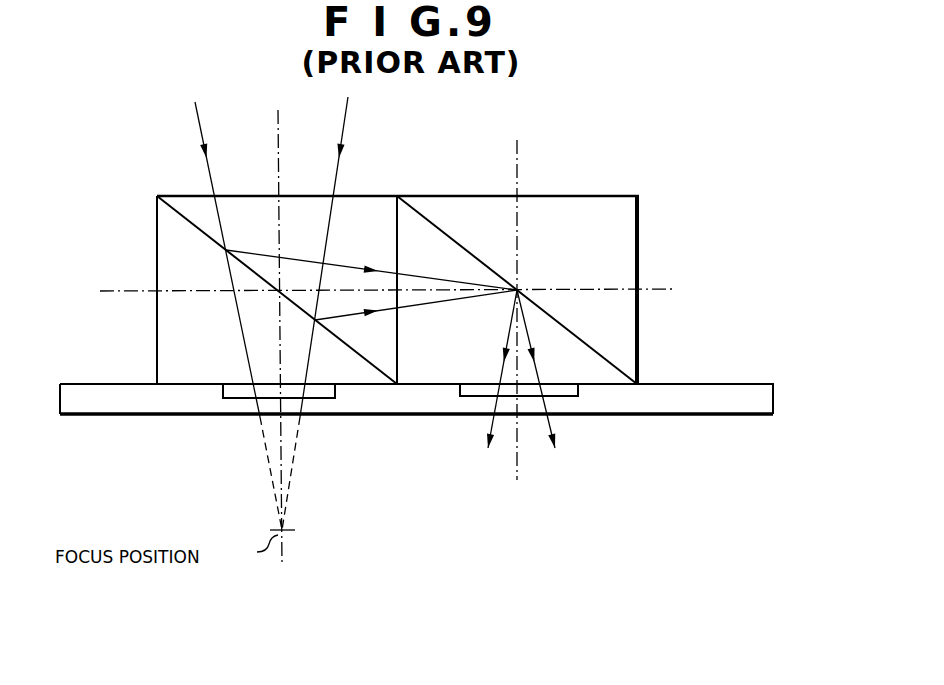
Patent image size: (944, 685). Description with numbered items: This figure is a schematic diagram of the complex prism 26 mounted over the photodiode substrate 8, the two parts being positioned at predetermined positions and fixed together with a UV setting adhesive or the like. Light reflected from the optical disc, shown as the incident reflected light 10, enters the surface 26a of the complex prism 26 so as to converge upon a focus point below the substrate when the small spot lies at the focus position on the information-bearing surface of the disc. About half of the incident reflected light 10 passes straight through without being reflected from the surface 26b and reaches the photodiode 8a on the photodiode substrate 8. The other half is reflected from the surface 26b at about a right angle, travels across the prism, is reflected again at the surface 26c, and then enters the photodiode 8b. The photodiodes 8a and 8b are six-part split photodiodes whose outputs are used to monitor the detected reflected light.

The photodiode substrate 8 is at (682, 397).
The photodiode 8a is at (323, 392).
The photodiode 8b is at (570, 392).
The incident reflected light 10 is at (349, 110).
The complex prism 26 is at (557, 212).
The surface 26a is at (188, 196).
The surface 26b is at (193, 226).
The surface 26c is at (436, 230).